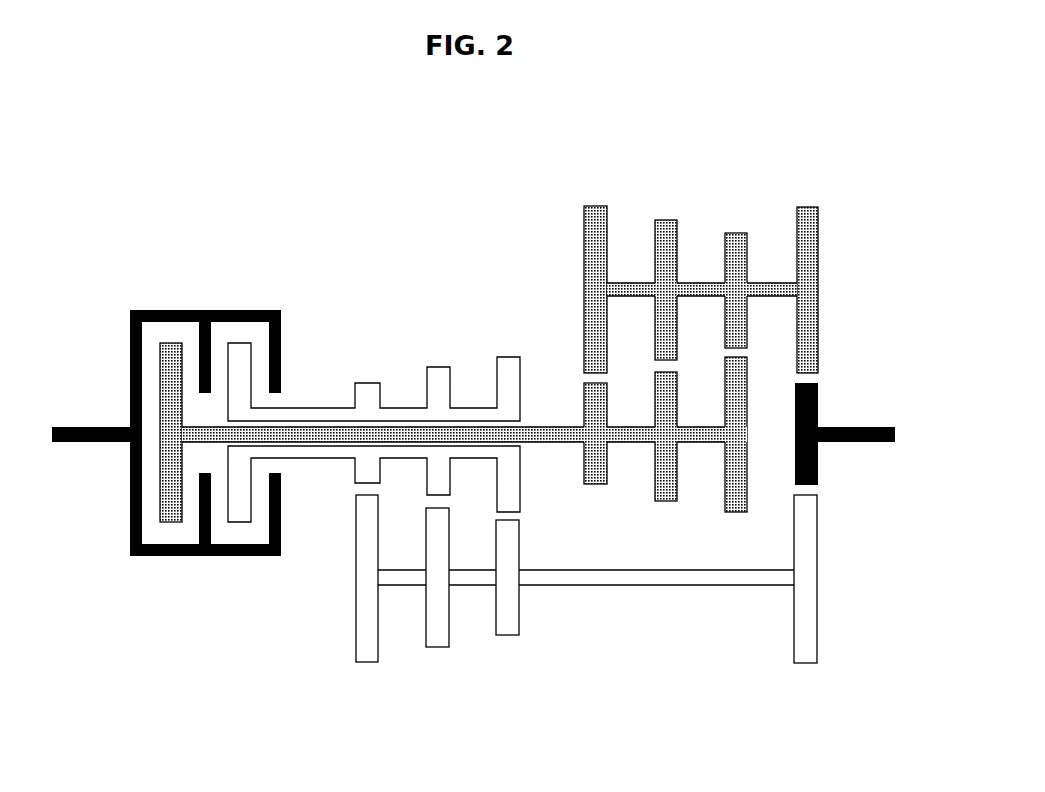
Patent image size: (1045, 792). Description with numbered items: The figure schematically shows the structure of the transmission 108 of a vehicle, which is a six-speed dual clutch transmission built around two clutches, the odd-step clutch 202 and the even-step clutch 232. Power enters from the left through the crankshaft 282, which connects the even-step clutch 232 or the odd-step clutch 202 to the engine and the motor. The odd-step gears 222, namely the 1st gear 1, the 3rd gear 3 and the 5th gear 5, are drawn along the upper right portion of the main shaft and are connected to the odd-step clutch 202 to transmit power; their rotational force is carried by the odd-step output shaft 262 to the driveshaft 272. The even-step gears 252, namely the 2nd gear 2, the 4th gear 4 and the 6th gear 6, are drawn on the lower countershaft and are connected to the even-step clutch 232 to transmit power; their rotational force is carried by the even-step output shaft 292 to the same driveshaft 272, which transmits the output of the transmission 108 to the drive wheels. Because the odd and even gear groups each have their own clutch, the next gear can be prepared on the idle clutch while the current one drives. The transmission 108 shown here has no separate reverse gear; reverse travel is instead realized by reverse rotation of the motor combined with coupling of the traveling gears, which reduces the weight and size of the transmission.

The transmission 108 is at (162, 174).
The crankshaft 282 is at (90, 427).
The odd-step clutch 202 is at (175, 523).
The even-step clutch 232 is at (240, 523).
The odd-step gears 222 is at (658, 336).
The odd-step output shaft 262 is at (771, 283).
The driveshaft 272 is at (858, 427).
The even-step gears 252 is at (428, 604).
The even-step output shaft 292 is at (713, 585).
The 1st gear 1 is at (587, 345).
The 2nd gear 2 is at (358, 578).
The 3rd gear 3 is at (657, 360).
The 4th gear 4 is at (429, 577).
The 5th gear 5 is at (727, 372).
The 6th gear 6 is at (499, 577).